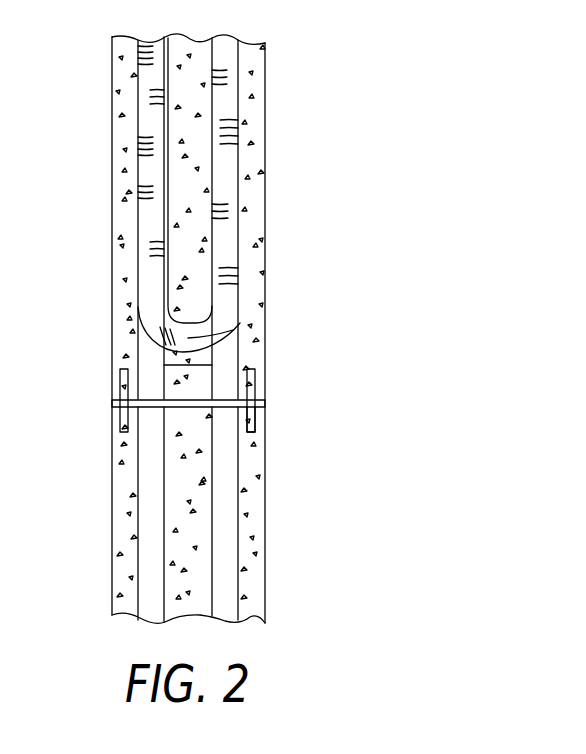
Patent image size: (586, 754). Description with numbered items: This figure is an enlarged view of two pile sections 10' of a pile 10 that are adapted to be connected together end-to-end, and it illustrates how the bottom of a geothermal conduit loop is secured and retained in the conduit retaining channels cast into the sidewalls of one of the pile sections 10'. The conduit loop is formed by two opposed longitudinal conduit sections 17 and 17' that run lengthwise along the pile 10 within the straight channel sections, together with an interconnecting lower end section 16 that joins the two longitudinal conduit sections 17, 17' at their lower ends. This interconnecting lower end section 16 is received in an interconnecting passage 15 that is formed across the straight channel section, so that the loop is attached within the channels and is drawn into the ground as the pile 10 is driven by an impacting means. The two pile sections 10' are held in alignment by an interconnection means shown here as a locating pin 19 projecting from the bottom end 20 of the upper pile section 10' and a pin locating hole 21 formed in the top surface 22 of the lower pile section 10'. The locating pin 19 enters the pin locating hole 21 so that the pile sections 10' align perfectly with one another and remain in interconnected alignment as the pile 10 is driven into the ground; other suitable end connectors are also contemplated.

The pile 10 is at (274, 328).
The pile section 10' is at (193, 330).
The interconnecting passage 15 is at (172, 340).
The interconnecting lower end section 16 is at (240, 323).
The longitudinal conduit section 17 is at (251, 318).
The opposed longitudinal conduit section 17' is at (139, 329).
The locating pin 19 is at (256, 388).
The bottom end 20 is at (119, 403).
The pin locating hole 21 is at (256, 424).
The top surface 22 is at (198, 407).